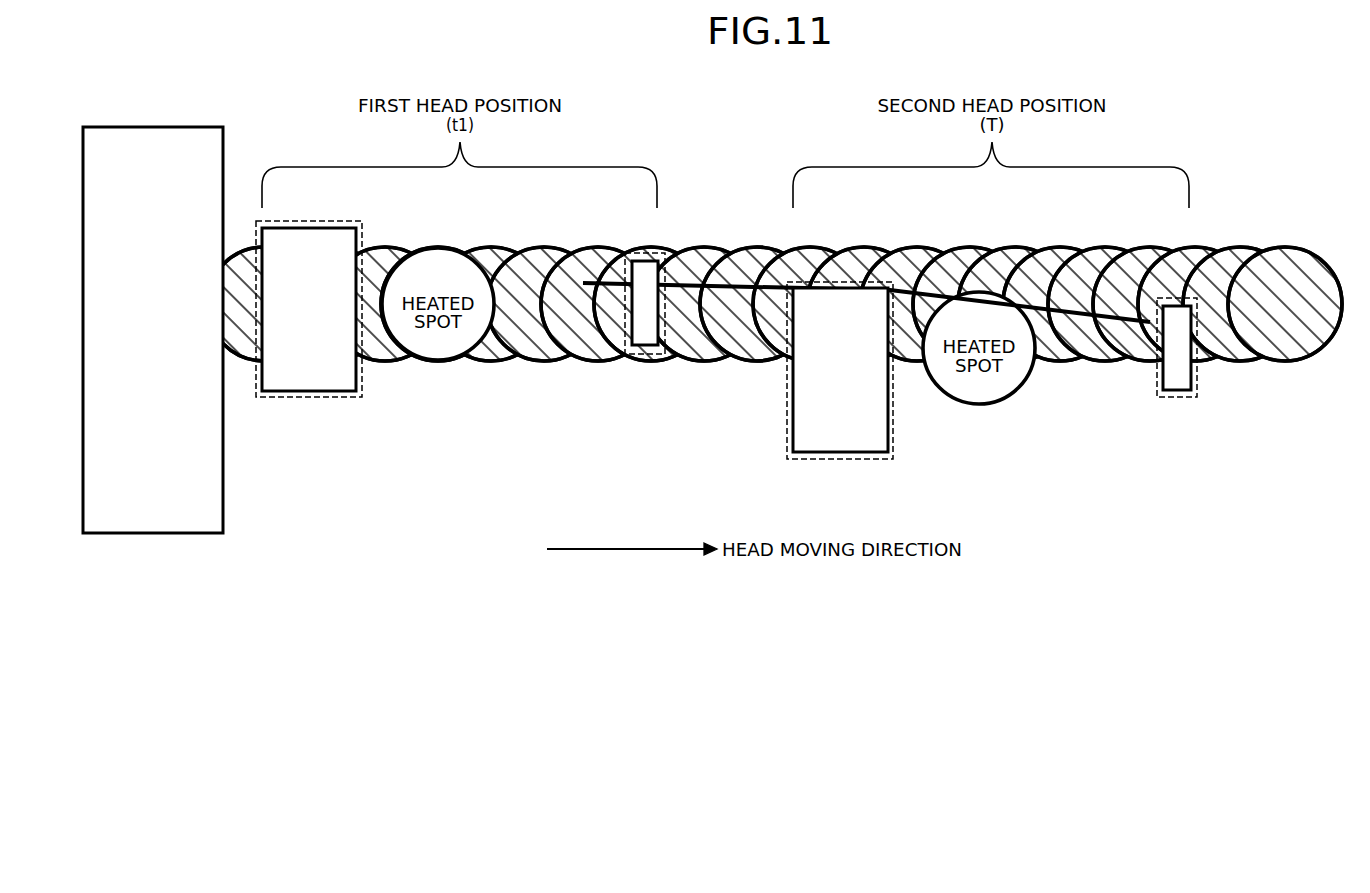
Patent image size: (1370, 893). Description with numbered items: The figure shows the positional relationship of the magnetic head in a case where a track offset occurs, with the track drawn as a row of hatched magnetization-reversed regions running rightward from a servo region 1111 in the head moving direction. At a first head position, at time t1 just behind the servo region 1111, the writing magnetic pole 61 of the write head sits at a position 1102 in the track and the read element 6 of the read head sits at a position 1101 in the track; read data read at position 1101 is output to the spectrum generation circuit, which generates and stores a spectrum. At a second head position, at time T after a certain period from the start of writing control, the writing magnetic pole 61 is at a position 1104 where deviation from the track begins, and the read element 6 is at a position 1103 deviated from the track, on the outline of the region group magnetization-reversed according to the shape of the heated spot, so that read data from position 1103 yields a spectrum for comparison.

The read element 6 is at (650, 268).
The writing magnetic pole 61 is at (341, 375).
The position of read element at first head position 1101 is at (650, 357).
The position of writing magnetic pole at first head position 1102 is at (306, 400).
The position of read head at second head position 1103 is at (1180, 399).
The position of writing magnetic pole at second head position 1104 is at (837, 461).
The servo region 1111 is at (223, 474).